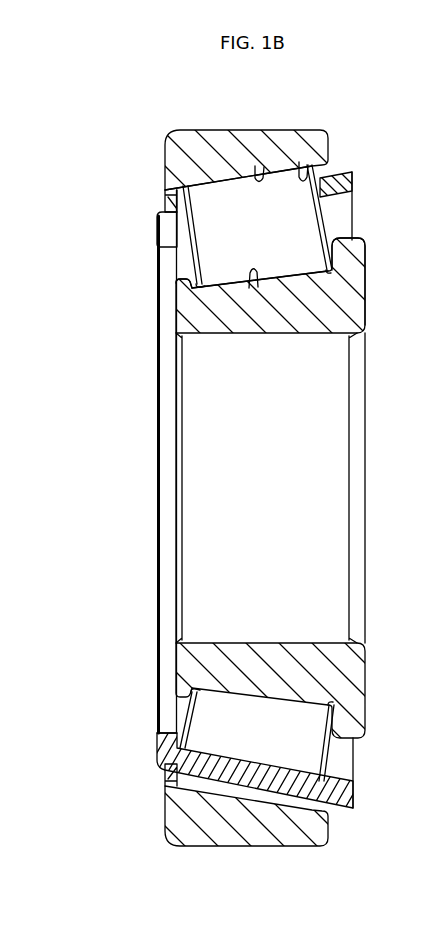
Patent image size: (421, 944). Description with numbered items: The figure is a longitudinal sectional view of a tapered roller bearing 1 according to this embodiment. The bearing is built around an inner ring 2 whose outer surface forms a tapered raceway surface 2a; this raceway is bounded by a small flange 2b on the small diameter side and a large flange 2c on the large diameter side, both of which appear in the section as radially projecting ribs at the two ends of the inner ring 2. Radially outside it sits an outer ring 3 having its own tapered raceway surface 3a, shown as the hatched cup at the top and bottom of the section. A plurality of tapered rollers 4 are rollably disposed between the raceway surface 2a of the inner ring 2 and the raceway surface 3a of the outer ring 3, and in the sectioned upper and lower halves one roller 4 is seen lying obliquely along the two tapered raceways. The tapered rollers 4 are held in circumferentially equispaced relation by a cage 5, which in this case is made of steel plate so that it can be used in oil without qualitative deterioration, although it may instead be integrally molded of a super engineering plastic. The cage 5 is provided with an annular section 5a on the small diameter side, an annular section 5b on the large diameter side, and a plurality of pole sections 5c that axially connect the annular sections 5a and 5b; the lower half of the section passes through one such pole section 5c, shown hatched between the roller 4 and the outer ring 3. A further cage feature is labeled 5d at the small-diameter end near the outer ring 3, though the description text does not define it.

The tapered roller bearing 1 is at (363, 128).
The inner ring 2 is at (337, 295).
The raceway surface 2a is at (254, 292).
The small flange 2b is at (175, 283).
The large flange 2c is at (347, 257).
The outer ring 3 is at (203, 138).
The raceway surface 3a is at (255, 166).
The tapered rollers 4 is at (307, 238).
The cage 5 is at (153, 216).
The annular section 5a is at (162, 230).
The annular section 5b is at (352, 178).
The pole sections 5c is at (293, 787).
The cage claw portion 5d is at (300, 160).